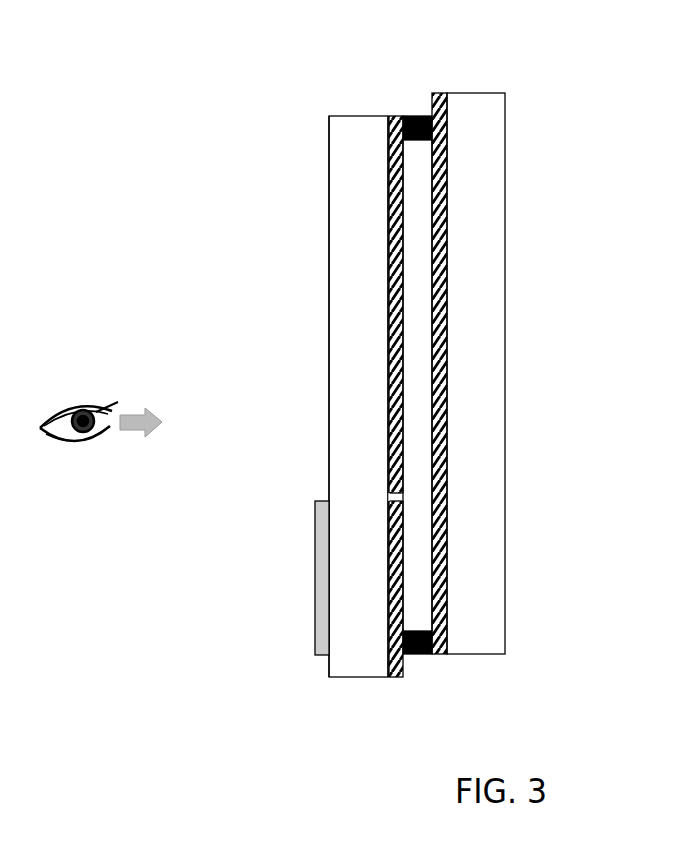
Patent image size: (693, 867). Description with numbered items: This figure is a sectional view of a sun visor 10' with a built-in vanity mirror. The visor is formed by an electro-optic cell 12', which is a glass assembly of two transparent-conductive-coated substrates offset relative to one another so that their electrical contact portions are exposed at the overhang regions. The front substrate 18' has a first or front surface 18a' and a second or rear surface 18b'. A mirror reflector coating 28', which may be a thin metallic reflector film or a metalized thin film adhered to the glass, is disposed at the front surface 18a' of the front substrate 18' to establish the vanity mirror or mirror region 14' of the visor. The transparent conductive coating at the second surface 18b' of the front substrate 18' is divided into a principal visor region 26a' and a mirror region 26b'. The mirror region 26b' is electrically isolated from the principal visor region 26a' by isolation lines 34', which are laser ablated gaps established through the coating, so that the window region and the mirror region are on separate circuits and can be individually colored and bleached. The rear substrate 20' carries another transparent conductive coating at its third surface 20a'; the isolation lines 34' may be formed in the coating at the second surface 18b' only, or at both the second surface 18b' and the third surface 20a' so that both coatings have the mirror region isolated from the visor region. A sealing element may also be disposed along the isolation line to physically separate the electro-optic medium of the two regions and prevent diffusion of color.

The sun visor 10' is at (352, 366).
The electro-optic cell 12' is at (405, 354).
The front substrate 18' is at (283, 396).
The first or front surface of the front substrate 18a' is at (253, 396).
The second surface of the front substrate 18b' is at (295, 396).
The rear substrate 20' is at (547, 373).
The third surface of the rear substrate 20a' is at (545, 373).
The principal visor region 26a' is at (302, 304).
The mirror region 26b' is at (299, 589).
The isolation lines 34' is at (493, 484).
The vanity mirror or mirror region 14' is at (208, 600).
The mirror reflector coating 28' is at (256, 600).